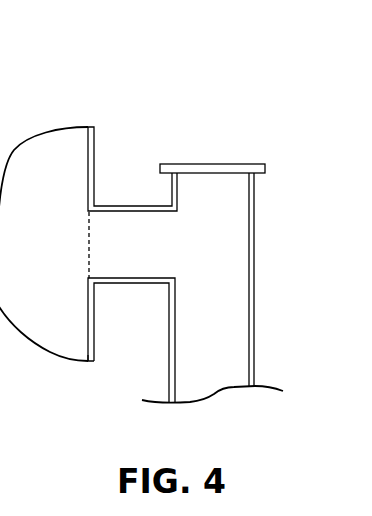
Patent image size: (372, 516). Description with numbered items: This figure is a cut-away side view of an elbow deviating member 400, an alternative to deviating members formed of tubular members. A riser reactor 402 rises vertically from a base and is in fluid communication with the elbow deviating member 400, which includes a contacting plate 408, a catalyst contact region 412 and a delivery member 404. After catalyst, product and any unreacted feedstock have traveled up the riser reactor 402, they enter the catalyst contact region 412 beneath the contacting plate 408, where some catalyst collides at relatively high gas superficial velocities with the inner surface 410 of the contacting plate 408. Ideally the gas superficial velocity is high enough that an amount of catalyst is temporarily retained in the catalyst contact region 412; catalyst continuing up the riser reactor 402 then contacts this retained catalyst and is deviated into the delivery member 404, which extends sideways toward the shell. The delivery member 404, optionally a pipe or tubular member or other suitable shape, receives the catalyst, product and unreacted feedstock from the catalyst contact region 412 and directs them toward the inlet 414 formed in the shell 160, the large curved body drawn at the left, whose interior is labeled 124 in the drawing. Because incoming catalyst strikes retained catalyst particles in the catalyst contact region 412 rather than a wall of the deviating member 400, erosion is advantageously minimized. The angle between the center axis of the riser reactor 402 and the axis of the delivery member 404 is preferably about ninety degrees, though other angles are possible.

The elbow deviating member 400 is at (227, 103).
The body 124 is at (53, 268).
The shell 160 is at (92, 289).
The riser reactor 402 is at (253, 371).
The delivery member 404 is at (142, 284).
The contacting plate 408 is at (261, 170).
The inner surface 410 is at (233, 176).
The catalyst contact region 412 is at (225, 196).
The inlet 414 is at (90, 235).